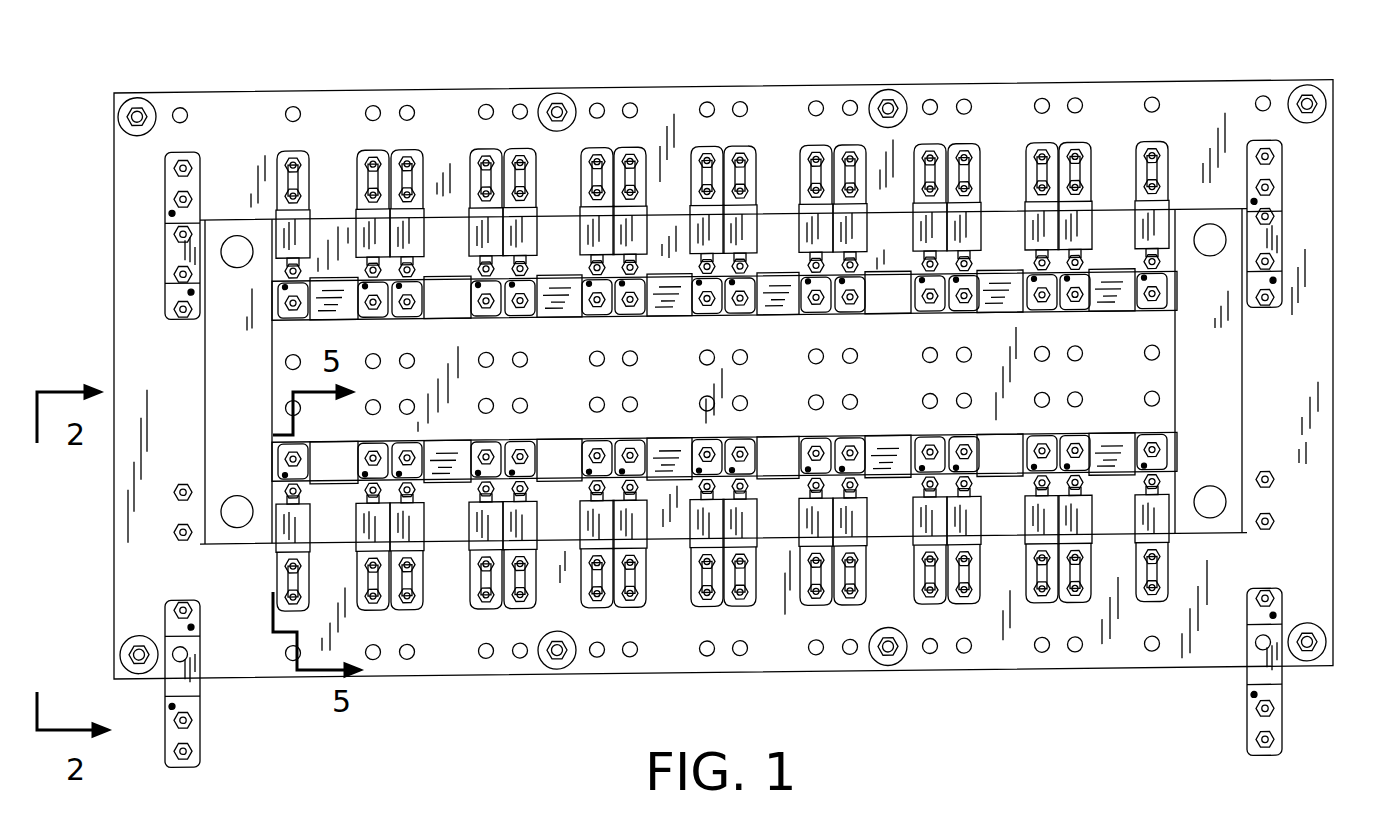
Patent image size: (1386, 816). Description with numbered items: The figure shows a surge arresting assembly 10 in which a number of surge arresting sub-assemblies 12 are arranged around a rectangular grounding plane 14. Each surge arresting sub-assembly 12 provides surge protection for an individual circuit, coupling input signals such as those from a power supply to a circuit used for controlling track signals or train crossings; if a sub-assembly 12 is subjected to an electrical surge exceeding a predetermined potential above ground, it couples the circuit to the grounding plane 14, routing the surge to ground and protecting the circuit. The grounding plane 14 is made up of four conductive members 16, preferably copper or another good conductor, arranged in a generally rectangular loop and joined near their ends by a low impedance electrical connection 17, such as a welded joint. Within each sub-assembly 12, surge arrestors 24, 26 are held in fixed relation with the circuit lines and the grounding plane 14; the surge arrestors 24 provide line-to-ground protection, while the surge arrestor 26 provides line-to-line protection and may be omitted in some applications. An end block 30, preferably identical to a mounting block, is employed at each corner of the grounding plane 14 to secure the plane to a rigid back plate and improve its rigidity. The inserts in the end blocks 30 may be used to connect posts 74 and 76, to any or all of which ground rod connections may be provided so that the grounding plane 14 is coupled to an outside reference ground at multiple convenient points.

The surge arresting assembly 10 is at (716, 52).
The surge arresting sub-assembly 12 is at (437, 148).
The grounding plane 14 is at (237, 556).
The conductive member 16 is at (787, 232).
The low impedance electrical connection 17 is at (237, 250).
The surge arrestor 24 is at (968, 222).
The line-to-line surge arrestor 26 is at (893, 323).
The end block 30 is at (172, 303).
The post 74 is at (172, 240).
The post 76 is at (172, 278).